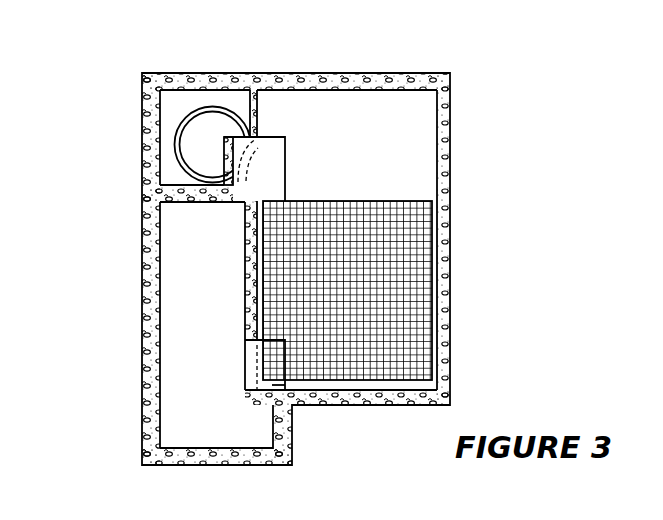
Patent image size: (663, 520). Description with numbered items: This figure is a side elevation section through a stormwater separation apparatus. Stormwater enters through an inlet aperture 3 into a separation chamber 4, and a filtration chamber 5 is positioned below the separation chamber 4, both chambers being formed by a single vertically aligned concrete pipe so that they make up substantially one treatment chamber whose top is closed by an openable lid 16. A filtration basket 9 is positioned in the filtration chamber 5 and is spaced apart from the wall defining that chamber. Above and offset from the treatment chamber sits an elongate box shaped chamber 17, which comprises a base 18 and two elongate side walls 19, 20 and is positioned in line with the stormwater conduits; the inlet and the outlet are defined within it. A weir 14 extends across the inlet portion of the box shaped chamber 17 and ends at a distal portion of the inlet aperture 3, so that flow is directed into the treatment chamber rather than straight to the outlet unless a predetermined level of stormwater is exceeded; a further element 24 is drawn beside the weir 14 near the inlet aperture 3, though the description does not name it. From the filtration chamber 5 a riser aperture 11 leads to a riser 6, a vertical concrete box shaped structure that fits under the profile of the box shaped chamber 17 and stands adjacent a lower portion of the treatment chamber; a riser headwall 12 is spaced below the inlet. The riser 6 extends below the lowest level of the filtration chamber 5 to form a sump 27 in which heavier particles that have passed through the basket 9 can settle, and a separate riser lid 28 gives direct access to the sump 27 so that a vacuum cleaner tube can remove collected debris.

The elongate box shaped chamber 17 is at (128, 86).
The riser lid 28 is at (180, 87).
The valve block 24 is at (231, 137).
The proximal side wall 20 is at (251, 112).
The inlet aperture 3 is at (257, 165).
The openable lid 16 is at (343, 76).
The separation chamber 4 is at (450, 153).
The filtration basket 9 is at (380, 250).
The filtration chamber 5 is at (435, 345).
The elongate side wall 19 is at (152, 144).
The weir 14 is at (218, 173).
The base 18 is at (197, 192).
The riser 6 is at (200, 292).
The riser headwall 12 is at (253, 342).
The riser aperture 11 is at (285, 395).
The sump 27 is at (218, 433).